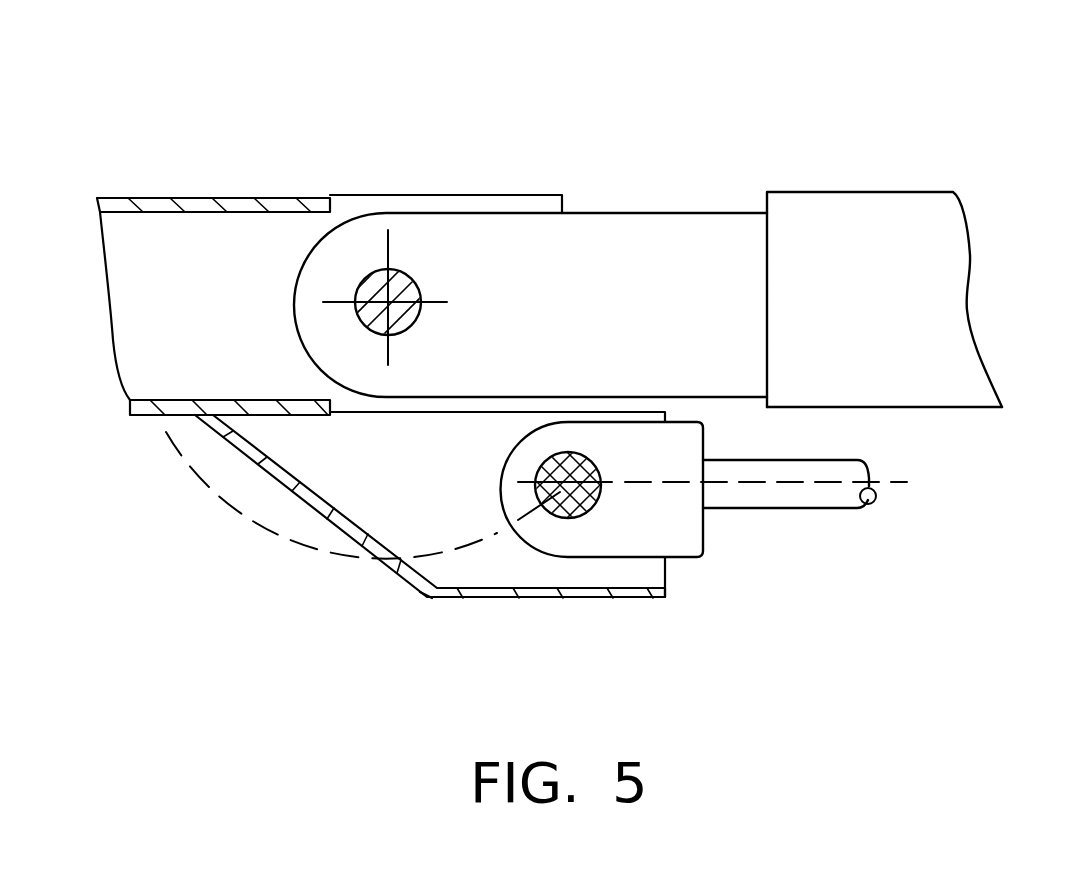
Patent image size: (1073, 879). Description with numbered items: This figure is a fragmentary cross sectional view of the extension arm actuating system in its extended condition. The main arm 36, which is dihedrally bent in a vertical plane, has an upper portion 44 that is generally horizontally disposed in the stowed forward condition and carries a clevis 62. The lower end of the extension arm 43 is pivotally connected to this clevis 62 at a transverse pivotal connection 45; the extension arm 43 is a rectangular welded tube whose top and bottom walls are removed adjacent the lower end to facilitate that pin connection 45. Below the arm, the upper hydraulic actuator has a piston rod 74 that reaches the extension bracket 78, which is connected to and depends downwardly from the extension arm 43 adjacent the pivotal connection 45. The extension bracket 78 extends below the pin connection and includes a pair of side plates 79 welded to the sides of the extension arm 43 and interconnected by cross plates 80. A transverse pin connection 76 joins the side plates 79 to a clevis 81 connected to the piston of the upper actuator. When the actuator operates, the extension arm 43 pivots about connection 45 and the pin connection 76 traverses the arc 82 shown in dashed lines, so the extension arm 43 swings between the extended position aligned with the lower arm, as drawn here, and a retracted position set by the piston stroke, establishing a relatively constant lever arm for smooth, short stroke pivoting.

The main arm 36 is at (930, 408).
The extension arm 43 is at (172, 203).
The upper portion 44 is at (893, 210).
The pivot connection 45 is at (368, 275).
The clevis 62 is at (629, 217).
The piston rod 74 is at (800, 493).
The pin connection 76 is at (598, 505).
The extension bracket 78 is at (428, 598).
The side plates 79 is at (517, 574).
The cross plates 80 is at (313, 507).
The clevis 81 is at (707, 540).
The arc 82 is at (190, 468).